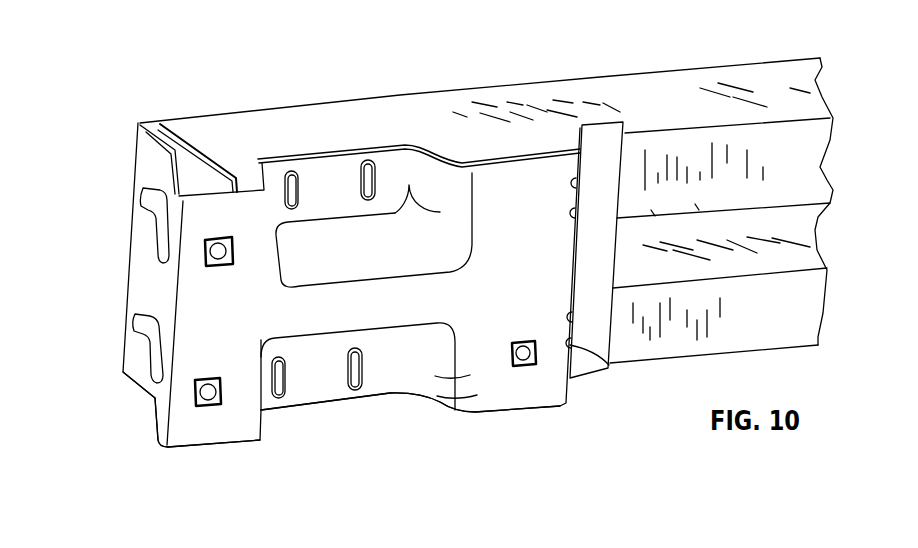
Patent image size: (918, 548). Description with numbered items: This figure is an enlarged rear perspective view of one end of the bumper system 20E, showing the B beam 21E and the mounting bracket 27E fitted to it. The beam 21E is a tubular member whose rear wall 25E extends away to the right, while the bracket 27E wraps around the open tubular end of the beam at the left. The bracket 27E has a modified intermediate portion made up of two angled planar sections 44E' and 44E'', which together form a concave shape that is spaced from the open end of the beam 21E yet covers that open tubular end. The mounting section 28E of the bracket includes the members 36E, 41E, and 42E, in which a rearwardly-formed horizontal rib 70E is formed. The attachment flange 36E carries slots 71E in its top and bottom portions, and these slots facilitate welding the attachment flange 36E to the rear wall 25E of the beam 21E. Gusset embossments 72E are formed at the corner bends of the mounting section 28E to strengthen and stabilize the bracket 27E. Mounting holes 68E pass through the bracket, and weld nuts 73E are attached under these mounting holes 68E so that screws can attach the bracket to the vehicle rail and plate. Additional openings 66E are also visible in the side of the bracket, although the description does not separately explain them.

The bumper system 20E is at (574, 58).
The rear wall 25E is at (793, 290).
The B beam 21E is at (265, 100).
The mounting bracket 27E is at (202, 462).
The mounting section 28E is at (610, 430).
The attachment flange 36E is at (377, 142).
The member 41E is at (440, 175).
The member 42E is at (253, 178).
The angled planar section 44E' is at (126, 408).
The angled planar section 44E'' is at (144, 443).
The side slots 66E is at (140, 193).
The mounting holes 68E is at (527, 370).
The horizontal rib 70E is at (377, 313).
The slots 71E is at (288, 388).
The gusset embossments 72E is at (606, 372).
The weld nuts 73E is at (538, 362).